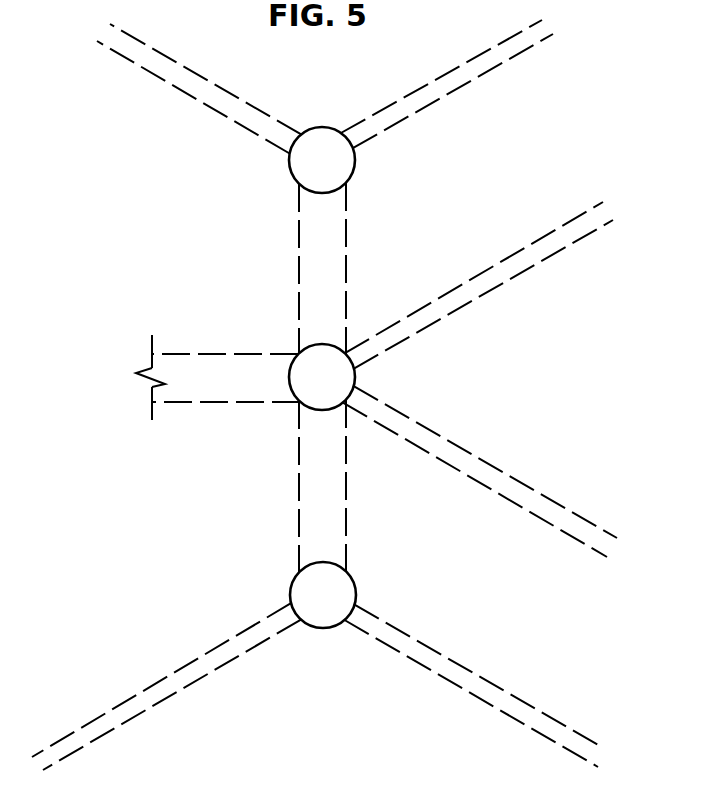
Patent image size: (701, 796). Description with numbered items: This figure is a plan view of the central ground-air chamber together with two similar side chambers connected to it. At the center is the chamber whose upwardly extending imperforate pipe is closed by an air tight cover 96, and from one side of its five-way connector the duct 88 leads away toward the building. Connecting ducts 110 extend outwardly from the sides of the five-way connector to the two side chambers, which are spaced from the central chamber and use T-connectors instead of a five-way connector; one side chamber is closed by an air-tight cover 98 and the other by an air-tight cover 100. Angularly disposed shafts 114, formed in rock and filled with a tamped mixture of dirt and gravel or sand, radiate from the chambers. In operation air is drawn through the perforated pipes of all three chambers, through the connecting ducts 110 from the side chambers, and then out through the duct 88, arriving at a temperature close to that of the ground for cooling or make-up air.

The duct 88 is at (217, 353).
The air tight cover 96 is at (356, 377).
The air-tight cover 98 is at (355, 170).
The air-tight cover 100 is at (357, 592).
The connecting ducts 110 is at (347, 240).
The angularly disposed shafts 114 is at (200, 102).